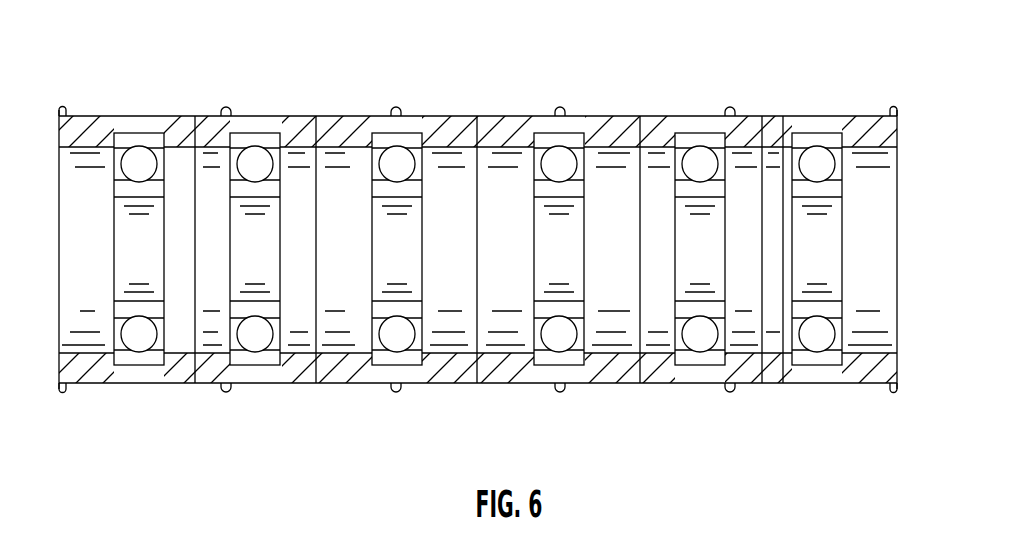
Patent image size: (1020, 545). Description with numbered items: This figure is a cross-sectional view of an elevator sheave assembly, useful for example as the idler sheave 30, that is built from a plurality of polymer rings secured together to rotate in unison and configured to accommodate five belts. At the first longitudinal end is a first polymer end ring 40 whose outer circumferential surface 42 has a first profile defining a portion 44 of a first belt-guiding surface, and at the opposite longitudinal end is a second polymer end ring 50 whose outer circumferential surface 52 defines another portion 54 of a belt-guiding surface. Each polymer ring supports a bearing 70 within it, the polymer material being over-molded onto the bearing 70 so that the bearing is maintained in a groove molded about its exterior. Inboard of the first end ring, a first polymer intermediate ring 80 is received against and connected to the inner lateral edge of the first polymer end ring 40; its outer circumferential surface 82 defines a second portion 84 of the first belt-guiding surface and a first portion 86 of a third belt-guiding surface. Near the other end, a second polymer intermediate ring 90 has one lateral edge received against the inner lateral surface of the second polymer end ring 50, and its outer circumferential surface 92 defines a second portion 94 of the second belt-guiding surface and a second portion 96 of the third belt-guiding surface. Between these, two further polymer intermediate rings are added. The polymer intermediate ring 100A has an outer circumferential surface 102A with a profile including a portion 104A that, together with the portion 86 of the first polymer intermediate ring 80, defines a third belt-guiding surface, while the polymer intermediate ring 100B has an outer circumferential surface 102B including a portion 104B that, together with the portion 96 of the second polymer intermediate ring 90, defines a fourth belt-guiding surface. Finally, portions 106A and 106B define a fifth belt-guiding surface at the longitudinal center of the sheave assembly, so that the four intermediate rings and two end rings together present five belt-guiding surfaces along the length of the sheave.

The idler sheave 30 is at (58, 78).
The first polymer end ring 40 is at (53, 328).
The outer circumferential surface 42 is at (125, 383).
The portion of belt-guiding surface 44 is at (120, 115).
The second polymer end ring 50 is at (903, 275).
The outer circumferential surface 52 is at (825, 383).
The portion of belt-guiding surface 54 is at (818, 117).
The bearing 70 is at (120, 247).
The first polymer intermediate ring 80 is at (211, 356).
The outer circumferential surface 82 is at (265, 387).
The second portion of first belt-guiding surface 84 is at (205, 115).
The first portion of third belt-guiding surface 86 is at (267, 115).
The second polymer intermediate ring 90 is at (743, 343).
The outer circumferential surface 92 is at (670, 383).
The second portion of second belt-guiding surface 94 is at (745, 117).
The second portion of third belt-guiding surface 96 is at (683, 117).
The polymer intermediate ring 100A is at (335, 358).
The polymer intermediate ring 100B is at (505, 343).
The outer circumferential surface 102A is at (413, 383).
The outer circumferential surface 102B is at (587, 383).
The portion of third belt-guiding surface 104A is at (347, 117).
The portion of fourth belt-guiding surface 104B is at (612, 117).
The portion of fifth belt-guiding surface 106A is at (430, 117).
The portion of fifth belt-guiding surface 106B is at (513, 117).